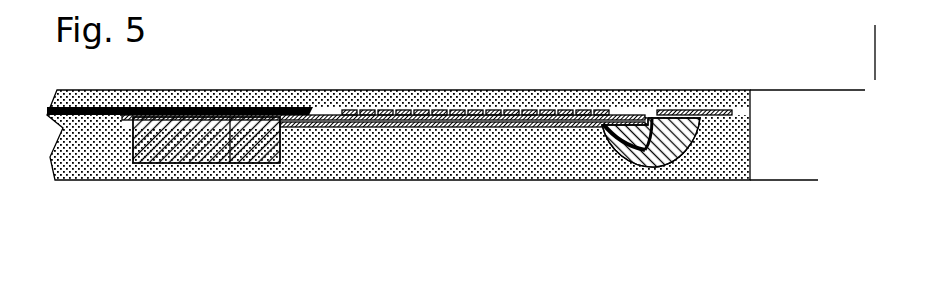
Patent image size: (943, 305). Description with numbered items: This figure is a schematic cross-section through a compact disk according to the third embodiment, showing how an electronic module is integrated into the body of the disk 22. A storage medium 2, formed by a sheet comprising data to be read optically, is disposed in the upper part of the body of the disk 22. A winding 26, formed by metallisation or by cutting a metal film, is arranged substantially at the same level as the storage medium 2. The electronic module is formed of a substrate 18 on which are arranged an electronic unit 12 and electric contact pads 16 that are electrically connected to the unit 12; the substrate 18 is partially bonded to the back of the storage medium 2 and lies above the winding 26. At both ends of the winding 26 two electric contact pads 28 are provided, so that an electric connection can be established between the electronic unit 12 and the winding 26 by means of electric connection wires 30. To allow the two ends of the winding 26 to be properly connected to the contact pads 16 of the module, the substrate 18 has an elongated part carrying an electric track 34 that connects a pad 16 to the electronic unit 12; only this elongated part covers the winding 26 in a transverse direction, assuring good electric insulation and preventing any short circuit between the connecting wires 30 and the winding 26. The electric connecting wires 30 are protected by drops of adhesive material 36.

The storage medium 2 is at (191, 107).
The electronic unit 12 is at (238, 110).
The substrate 18 is at (323, 115).
The winding 26 is at (446, 93).
The electric contact pads 28 is at (694, 106).
The electric track 34 is at (351, 127).
The disk 22 is at (470, 143).
The electric contact pads 16 is at (600, 150).
The electric connection wires 30 is at (648, 162).
The drops of adhesive material 36 is at (678, 152).